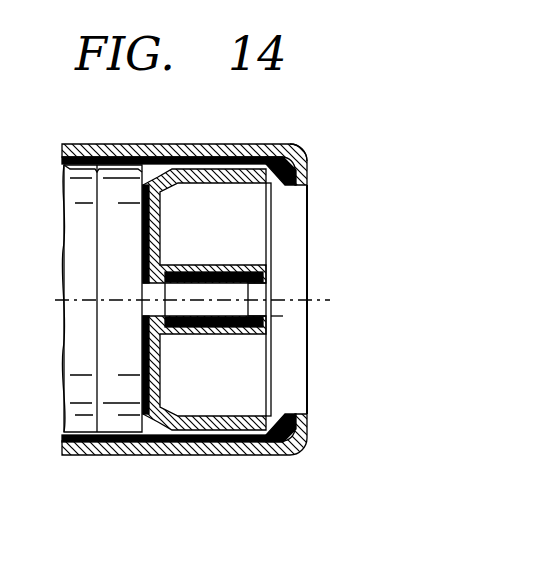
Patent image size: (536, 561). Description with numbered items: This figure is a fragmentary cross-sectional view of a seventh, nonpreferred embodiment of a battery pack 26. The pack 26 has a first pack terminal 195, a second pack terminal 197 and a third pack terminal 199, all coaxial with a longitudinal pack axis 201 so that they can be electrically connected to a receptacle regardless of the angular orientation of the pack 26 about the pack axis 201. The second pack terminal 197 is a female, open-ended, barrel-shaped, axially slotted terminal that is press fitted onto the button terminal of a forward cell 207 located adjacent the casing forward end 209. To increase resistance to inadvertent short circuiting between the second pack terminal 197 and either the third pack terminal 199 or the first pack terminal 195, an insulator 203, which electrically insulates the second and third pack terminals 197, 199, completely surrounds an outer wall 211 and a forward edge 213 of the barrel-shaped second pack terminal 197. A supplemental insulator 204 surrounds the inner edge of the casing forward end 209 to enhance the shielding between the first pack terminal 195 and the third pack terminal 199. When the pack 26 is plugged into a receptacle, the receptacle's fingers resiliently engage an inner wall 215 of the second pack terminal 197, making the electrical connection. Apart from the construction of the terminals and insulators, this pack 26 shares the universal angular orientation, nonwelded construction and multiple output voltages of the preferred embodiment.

The battery pack 26 is at (100, 130).
The first pack terminal 195 is at (190, 135).
The casing forward end 209 is at (297, 152).
The supplemental insulator 204 is at (285, 180).
The forward cell 207 is at (62, 430).
The third pack terminal 199 is at (233, 180).
The outer wall 211 is at (233, 332).
The insulator 203 is at (272, 262).
The inner wall 215 is at (165, 296).
The forward edge 213 is at (270, 312).
The second pack terminal 197 is at (283, 322).
The pack axis 201 is at (318, 298).